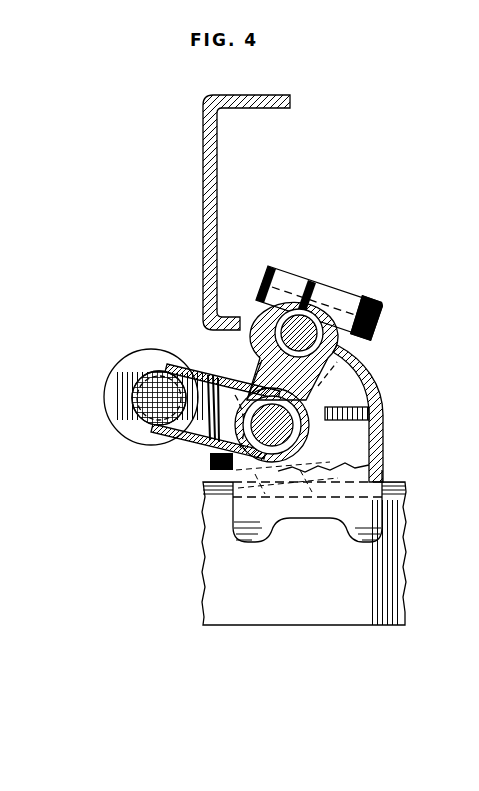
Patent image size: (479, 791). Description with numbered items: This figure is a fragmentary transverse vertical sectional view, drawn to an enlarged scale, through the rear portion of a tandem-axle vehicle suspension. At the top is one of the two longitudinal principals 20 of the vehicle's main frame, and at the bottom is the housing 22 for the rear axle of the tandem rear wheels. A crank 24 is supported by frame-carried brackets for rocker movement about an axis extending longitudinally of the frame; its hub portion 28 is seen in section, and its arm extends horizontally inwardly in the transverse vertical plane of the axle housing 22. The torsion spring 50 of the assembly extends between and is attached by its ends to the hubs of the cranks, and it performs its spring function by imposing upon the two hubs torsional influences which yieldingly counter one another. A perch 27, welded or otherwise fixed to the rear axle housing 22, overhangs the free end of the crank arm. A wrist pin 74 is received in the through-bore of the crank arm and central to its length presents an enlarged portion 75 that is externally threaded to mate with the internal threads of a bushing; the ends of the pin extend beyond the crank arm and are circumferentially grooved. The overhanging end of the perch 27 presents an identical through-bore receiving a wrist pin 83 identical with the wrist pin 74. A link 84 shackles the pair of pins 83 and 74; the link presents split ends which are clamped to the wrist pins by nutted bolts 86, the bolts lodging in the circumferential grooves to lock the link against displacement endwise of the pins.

The longitudinal principal 20 is at (211, 153).
The rear axle housing 22 is at (287, 613).
The crank 24 is at (200, 456).
The perch 27 is at (368, 379).
The hub portion 28 is at (127, 428).
The torsion spring 50 is at (110, 399).
The wrist pin 74 is at (314, 432).
The enlarged portion 75 is at (346, 338).
The wrist pin 83 is at (274, 334).
The link 84 is at (261, 379).
The nutted bolt 86 is at (272, 268).